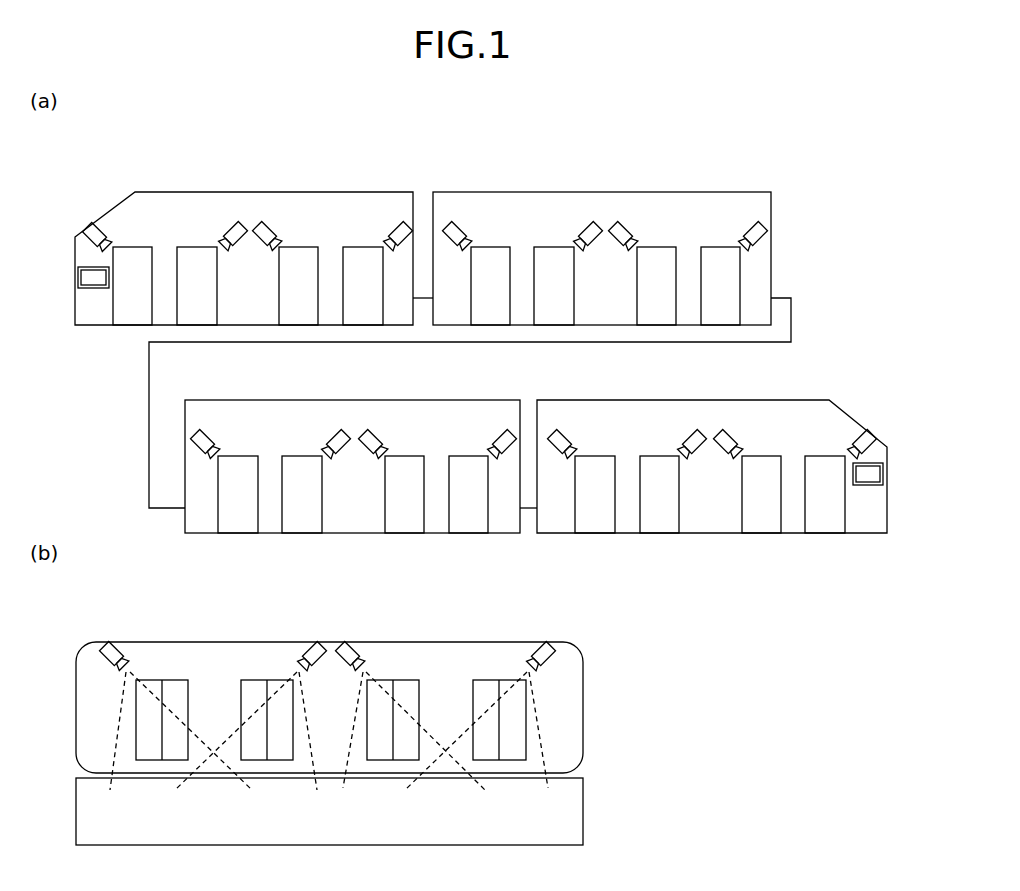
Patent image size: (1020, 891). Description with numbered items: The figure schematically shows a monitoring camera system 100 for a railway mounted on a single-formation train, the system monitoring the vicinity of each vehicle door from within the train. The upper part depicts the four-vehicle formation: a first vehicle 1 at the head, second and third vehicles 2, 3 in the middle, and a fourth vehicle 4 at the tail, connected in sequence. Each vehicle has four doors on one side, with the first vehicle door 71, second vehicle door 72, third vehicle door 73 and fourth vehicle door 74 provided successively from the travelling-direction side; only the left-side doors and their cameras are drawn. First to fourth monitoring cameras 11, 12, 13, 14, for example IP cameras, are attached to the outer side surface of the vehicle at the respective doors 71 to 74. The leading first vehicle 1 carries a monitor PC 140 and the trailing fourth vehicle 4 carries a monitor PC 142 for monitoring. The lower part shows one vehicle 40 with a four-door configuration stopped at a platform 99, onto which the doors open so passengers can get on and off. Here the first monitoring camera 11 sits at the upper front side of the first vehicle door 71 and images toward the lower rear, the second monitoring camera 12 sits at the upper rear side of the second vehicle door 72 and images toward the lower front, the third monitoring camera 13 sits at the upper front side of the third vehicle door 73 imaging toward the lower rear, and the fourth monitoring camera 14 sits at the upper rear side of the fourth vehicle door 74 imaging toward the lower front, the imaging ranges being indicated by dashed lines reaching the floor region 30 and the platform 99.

The monitoring camera system 100 is at (85, 150).
The first vehicle 1 is at (157, 192).
The second vehicle 2 is at (518, 192).
The third vehicle 3 is at (266, 400).
The fourth vehicle 4 is at (624, 400).
The first monitoring camera 11 is at (95, 226).
The second monitoring camera 12 is at (229, 222).
The third monitoring camera 13 is at (268, 222).
The fourth monitoring camera 14 is at (395, 222).
The first vehicle door 71 is at (135, 247).
The second vehicle door 72 is at (196, 247).
The third vehicle door 73 is at (300, 247).
The fourth vehicle door 74 is at (363, 247).
The monitor PC 140 is at (94, 290).
The monitor PC 142 is at (873, 488).
The vehicle 40 is at (570, 708).
The floor 30 is at (545, 752).
The platform 99 is at (570, 822).